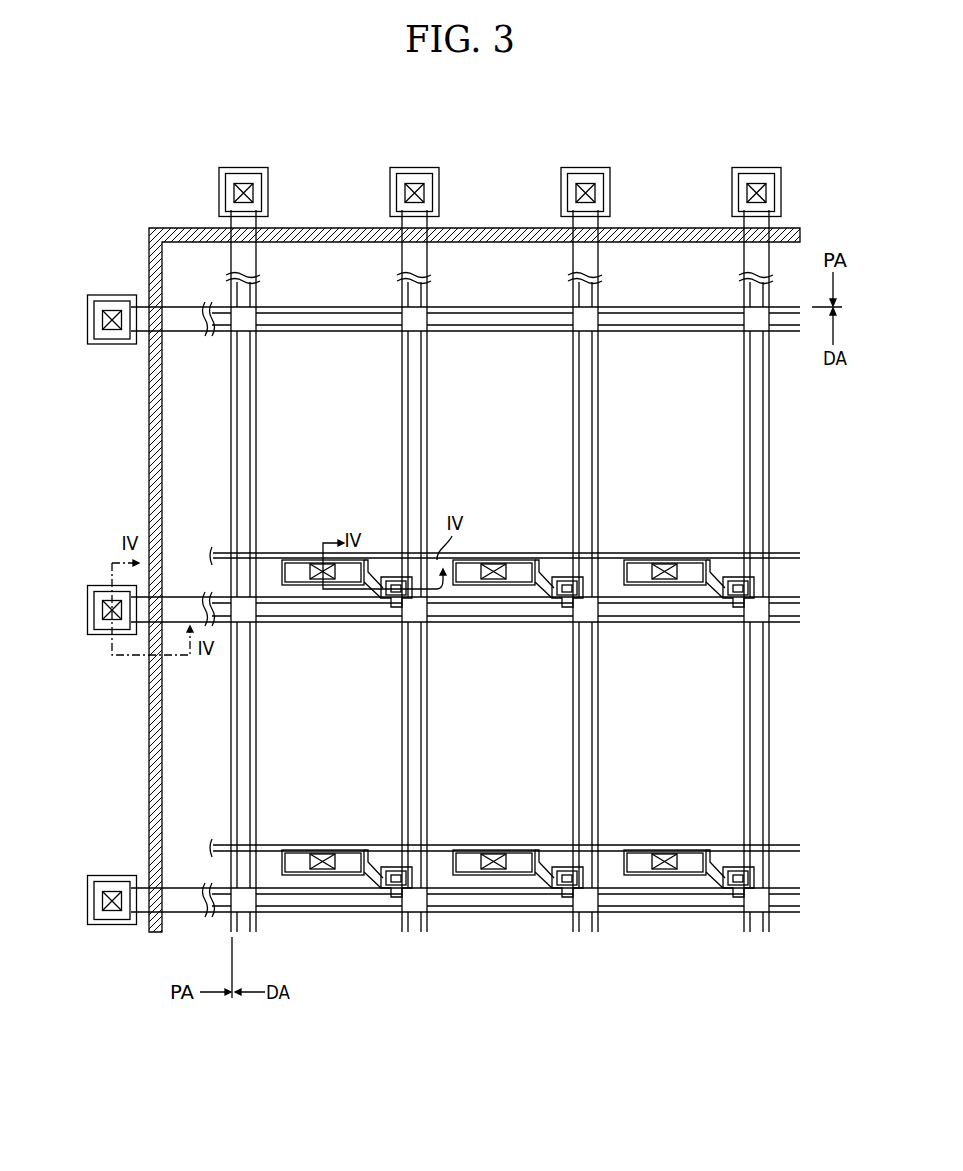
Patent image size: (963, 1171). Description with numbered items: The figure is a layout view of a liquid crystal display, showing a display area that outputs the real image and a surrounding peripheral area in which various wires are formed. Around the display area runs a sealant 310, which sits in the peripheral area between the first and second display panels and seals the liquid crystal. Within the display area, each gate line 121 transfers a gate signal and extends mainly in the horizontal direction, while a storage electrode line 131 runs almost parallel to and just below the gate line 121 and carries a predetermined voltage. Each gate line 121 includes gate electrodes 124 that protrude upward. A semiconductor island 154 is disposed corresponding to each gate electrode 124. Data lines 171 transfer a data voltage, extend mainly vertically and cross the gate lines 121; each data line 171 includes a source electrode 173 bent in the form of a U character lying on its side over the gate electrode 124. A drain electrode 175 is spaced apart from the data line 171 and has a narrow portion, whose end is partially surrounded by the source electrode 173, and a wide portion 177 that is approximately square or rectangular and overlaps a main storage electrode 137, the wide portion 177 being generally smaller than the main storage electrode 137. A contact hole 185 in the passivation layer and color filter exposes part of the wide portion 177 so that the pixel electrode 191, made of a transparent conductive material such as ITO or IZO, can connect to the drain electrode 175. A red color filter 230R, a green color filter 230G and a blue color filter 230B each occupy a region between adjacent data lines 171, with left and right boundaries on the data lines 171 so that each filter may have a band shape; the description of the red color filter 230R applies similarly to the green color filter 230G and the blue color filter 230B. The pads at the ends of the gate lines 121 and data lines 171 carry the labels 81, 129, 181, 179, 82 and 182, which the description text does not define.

The sealant 310 is at (149, 478).
The end portion of data line 179 is at (439, 179).
The data pad 82 is at (439, 205).
The contact hole 182 is at (405, 192).
The gate pad 81 is at (117, 876).
The end portion of gate line 129 is at (128, 920).
The contact hole 181 is at (108, 913).
The data line 171 is at (256, 435).
The gate line 121 is at (328, 913).
The pixel electrode 191 is at (408, 722).
The storage electrode line 131 is at (388, 555).
The wide portion 177 is at (296, 560).
The main storage electrode 137 is at (294, 588).
The contact hole 185 is at (497, 850).
The semiconductor island 154 is at (388, 575).
The gate electrode 124 is at (392, 866).
The drain electrode 175 is at (392, 600).
The source electrode 173 is at (397, 607).
The red color filter 230R is at (507, 595).
The green color filter 230G is at (421, 595).
The blue color filter 230B is at (594, 595).